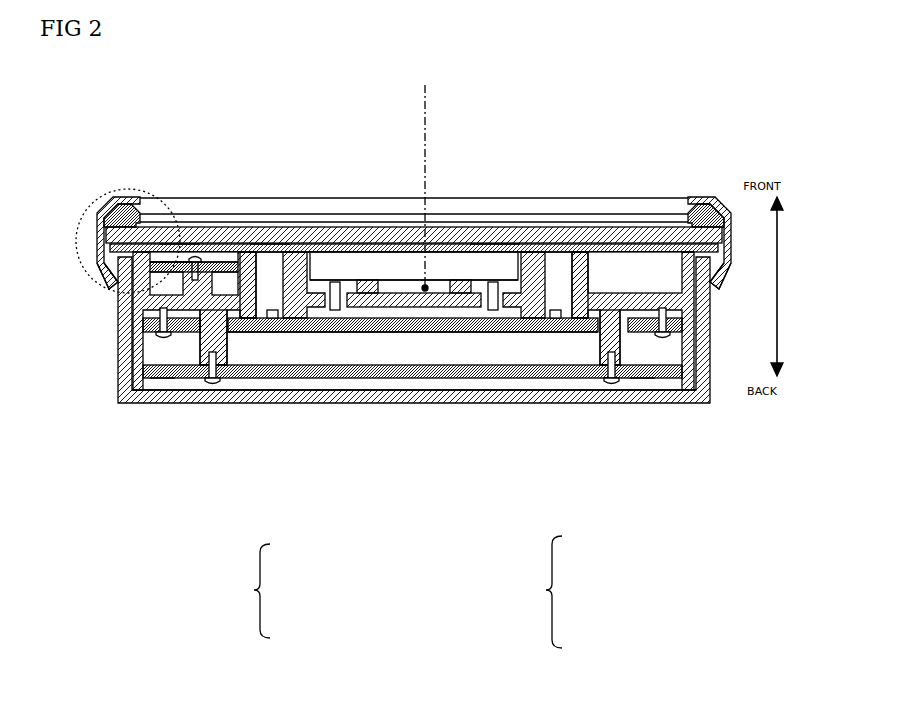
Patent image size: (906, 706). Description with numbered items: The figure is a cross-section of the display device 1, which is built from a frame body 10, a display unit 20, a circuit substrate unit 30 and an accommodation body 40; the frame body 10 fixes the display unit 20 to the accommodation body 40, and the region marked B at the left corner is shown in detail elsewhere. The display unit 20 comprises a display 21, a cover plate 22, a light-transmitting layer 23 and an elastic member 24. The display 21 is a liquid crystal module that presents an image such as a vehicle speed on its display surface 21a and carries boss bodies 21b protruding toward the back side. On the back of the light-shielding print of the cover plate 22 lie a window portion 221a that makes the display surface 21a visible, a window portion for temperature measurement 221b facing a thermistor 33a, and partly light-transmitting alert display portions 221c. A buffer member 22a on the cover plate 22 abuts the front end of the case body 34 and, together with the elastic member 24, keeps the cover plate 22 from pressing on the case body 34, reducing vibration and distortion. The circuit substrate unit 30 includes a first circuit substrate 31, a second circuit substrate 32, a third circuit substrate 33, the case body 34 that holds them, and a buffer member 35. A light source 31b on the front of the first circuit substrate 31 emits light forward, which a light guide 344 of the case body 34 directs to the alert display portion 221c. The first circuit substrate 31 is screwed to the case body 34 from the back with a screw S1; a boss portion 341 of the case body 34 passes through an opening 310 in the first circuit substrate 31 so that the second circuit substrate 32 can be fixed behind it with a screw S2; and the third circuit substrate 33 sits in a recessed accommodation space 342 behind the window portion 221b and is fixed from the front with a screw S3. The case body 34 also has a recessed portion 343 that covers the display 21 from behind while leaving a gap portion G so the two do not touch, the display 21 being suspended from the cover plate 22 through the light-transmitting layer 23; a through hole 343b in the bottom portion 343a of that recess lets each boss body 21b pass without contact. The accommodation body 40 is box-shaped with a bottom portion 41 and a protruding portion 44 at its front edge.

The display device 1 is at (631, 112).
The frame body 10 is at (112, 195).
The display unit 20 is at (210, 591).
The display 21 is at (403, 268).
The display surface 21a is at (412, 250).
The boss body 21b is at (340, 281).
The cover plate 22 is at (582, 221).
The buffer member 22a is at (643, 257).
The window portion 221a is at (486, 247).
The window portion for temperature measurement 221b is at (180, 247).
The alert display portion 221c is at (270, 221).
The light-transmitting layer 23 is at (447, 247).
The elastic member 24 is at (133, 212).
The circuit substrate unit 30 is at (479, 592).
The first circuit substrate 31 is at (450, 333).
The light source 31b is at (295, 334).
The second circuit substrate 32 is at (551, 379).
The third circuit substrate 33 is at (231, 262).
The thermistor 33a is at (157, 262).
The case body 34 is at (687, 313).
The boss portion 341 is at (226, 346).
The recessed accommodation space 342 is at (143, 312).
The recessed portion 343 is at (297, 262).
The bottom portion 343a is at (447, 288).
The through hole 343b is at (336, 282).
The light guide 344 is at (250, 260).
The buffer member 35 is at (397, 300).
The accommodation body 40 is at (174, 405).
The bottom portion 41 is at (268, 398).
The protruding portion 44 is at (103, 270).
The opening 310 is at (162, 382).
The screw S1 is at (165, 335).
The screw S2 is at (213, 382).
The screw S3 is at (213, 276).
The gap portion G is at (425, 174).
The enlarged region B is at (92, 192).